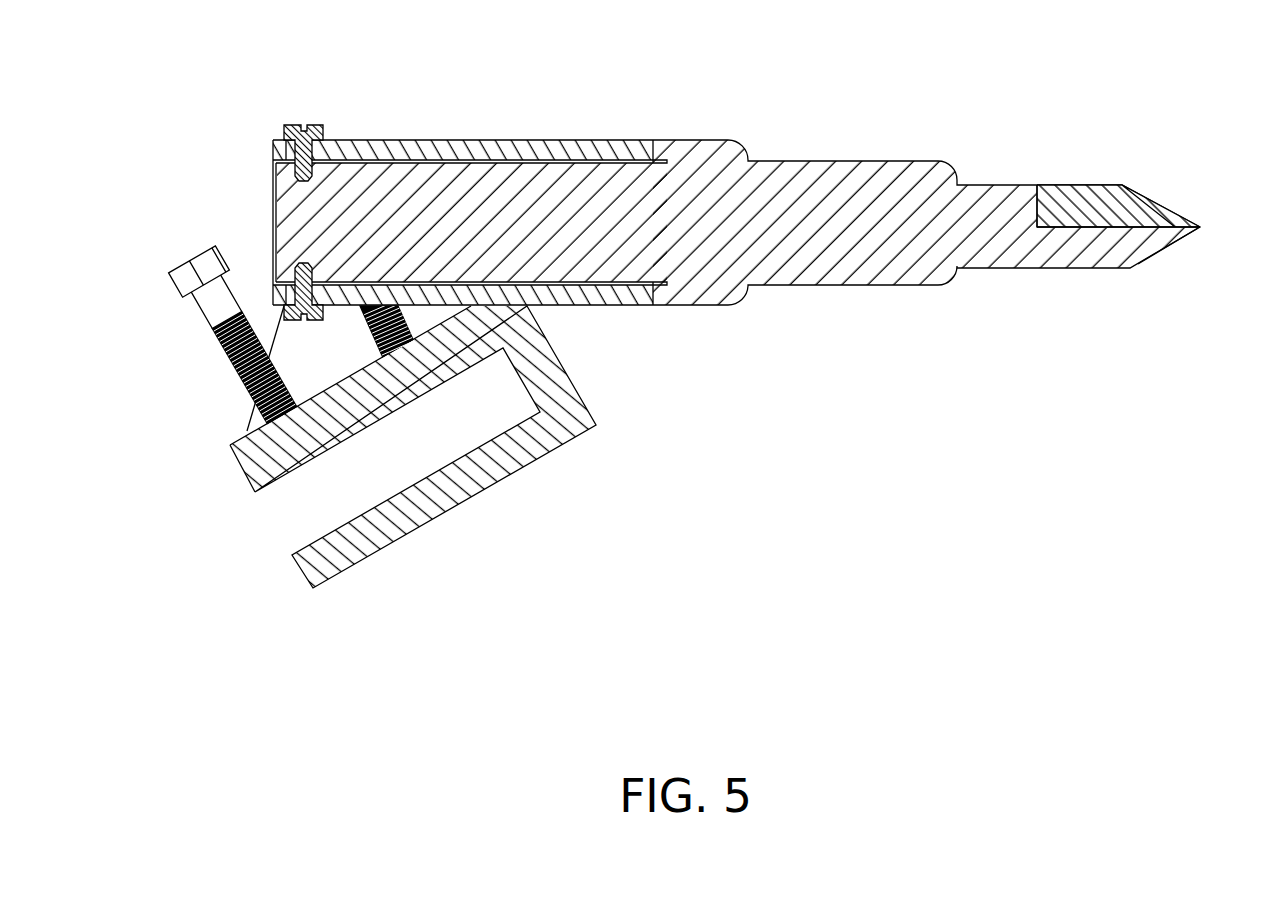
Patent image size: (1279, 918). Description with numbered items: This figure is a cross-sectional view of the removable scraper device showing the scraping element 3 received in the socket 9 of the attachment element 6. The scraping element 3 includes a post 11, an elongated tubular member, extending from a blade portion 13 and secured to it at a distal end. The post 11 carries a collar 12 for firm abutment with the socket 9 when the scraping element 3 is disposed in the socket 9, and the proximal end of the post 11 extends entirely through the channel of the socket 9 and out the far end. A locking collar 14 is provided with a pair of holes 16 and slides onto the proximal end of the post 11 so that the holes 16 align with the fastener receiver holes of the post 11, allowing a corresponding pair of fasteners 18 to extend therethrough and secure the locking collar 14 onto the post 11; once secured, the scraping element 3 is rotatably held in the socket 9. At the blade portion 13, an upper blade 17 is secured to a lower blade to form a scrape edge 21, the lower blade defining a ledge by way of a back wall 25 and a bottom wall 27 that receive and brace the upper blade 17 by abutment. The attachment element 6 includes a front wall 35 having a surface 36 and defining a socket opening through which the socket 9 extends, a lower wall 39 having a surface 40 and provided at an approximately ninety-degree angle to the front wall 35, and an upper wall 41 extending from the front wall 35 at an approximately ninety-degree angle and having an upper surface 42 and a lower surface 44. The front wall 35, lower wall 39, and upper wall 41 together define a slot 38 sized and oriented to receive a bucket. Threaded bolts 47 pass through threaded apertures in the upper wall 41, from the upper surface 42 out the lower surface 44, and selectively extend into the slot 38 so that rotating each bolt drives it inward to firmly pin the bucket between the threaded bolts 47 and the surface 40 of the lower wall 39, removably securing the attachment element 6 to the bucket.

The scraping element 3 is at (724, 203).
The attachment element 6 is at (399, 463).
The socket 9 is at (491, 142).
The post 11 is at (589, 176).
The collar 12 is at (717, 293).
The blade portion 13 is at (944, 291).
The locking collar 14 is at (268, 146).
The holes 16 is at (316, 156).
The upper blade 17 is at (1094, 190).
The fasteners 18 is at (320, 133).
The scrape edge 21 is at (1199, 218).
The back wall 25 is at (1038, 207).
The bottom wall 27 is at (1110, 222).
The front wall 35 is at (546, 359).
The surface 36 is at (530, 396).
The slot 38 is at (391, 460).
The lower wall 39 is at (373, 533).
The surface 40 is at (490, 436).
The upper wall 41 is at (265, 455).
The upper surface 42 is at (245, 433).
The lower surface 44 is at (322, 455).
The threaded bolts 47 is at (224, 350).